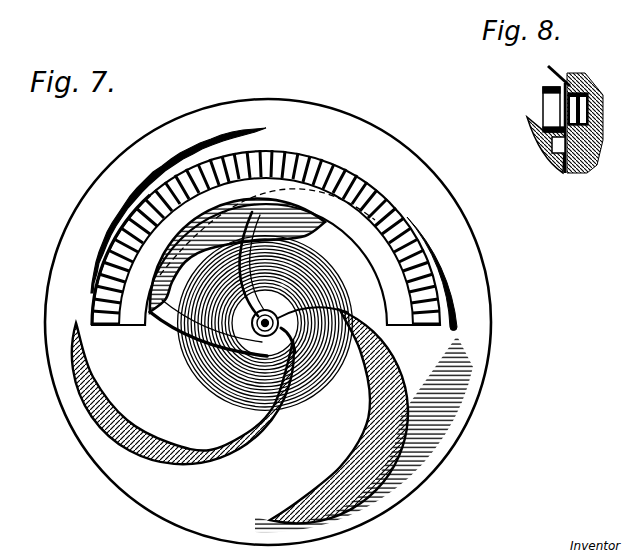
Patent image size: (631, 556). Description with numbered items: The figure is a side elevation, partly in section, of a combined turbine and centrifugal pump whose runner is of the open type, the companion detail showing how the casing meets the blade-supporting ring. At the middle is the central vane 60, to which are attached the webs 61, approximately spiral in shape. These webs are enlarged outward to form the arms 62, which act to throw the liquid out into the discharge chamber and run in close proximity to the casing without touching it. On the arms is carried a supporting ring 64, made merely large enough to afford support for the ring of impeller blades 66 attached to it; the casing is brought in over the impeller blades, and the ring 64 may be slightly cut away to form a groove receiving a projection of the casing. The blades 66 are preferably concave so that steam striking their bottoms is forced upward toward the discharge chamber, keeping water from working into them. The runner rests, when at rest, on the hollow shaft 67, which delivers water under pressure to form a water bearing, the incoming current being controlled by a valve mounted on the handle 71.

The central vane 60 is at (369, 153).
The webs 61 is at (287, 300).
The arms 62 is at (343, 420).
The ring 64 is at (435, 237).
The ring of impeller blades 66 is at (453, 280).
The shaft 67 is at (288, 316).
The handle 71 is at (252, 323).